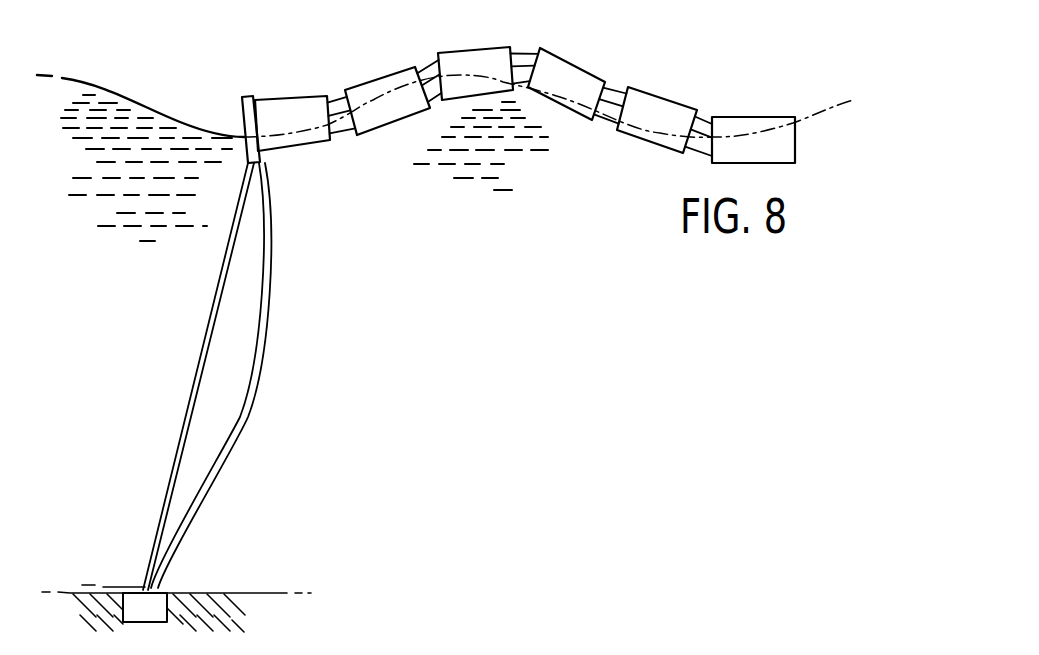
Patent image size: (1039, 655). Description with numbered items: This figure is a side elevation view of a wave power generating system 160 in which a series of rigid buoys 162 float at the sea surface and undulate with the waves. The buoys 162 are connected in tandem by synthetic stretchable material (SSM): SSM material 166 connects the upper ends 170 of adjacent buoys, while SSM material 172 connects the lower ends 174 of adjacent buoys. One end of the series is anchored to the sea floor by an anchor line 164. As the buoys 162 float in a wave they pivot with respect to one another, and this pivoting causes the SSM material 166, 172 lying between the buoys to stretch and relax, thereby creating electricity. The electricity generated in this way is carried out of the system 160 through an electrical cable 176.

The system 160 is at (210, 76).
The rigid buoys 162 is at (633, 90).
The anchor line 164 is at (200, 355).
The SSM material 166 is at (336, 92).
The upper ends 170 is at (290, 98).
The SSM material 172 is at (341, 136).
The lower ends 174 is at (275, 155).
The electrical cable 176 is at (187, 510).